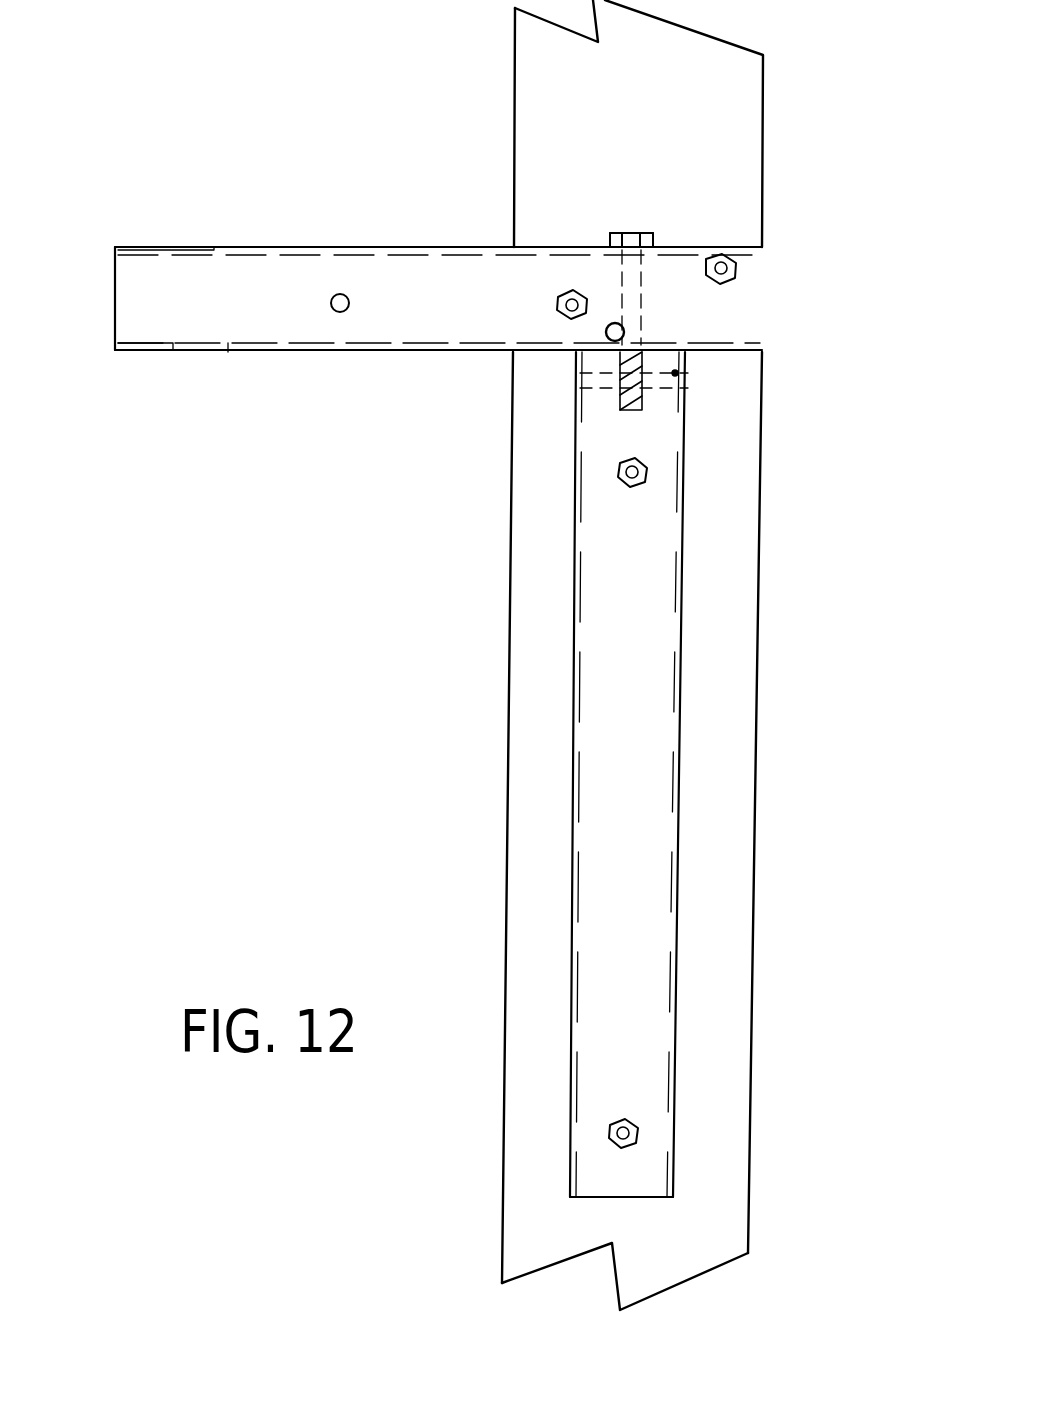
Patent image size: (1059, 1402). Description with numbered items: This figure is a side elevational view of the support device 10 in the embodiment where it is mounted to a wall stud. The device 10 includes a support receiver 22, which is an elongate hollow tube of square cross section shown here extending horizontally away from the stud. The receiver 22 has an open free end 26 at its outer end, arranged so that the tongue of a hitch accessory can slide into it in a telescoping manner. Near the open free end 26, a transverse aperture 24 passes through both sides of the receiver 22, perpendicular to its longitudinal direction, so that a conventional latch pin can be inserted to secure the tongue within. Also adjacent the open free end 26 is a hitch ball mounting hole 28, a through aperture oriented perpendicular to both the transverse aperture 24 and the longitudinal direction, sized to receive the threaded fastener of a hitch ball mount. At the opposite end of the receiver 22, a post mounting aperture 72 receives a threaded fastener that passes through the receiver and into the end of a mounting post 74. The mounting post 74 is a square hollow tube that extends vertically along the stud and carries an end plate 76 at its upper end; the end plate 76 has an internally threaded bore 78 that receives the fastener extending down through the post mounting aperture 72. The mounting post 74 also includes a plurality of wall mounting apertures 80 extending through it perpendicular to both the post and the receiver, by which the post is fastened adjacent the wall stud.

The device 10 is at (291, 544).
The support receiver 22 is at (425, 280).
The transverse aperture 24 is at (349, 303).
The open free end 26 is at (115, 302).
The hitch ball mounting hole 28 is at (215, 250).
The post mounting aperture 72 is at (640, 247).
The mounting post 74 is at (590, 648).
The end plate 76 is at (660, 380).
The internally threaded bore 78 is at (615, 400).
The wall mounting apertures 80 is at (618, 468).